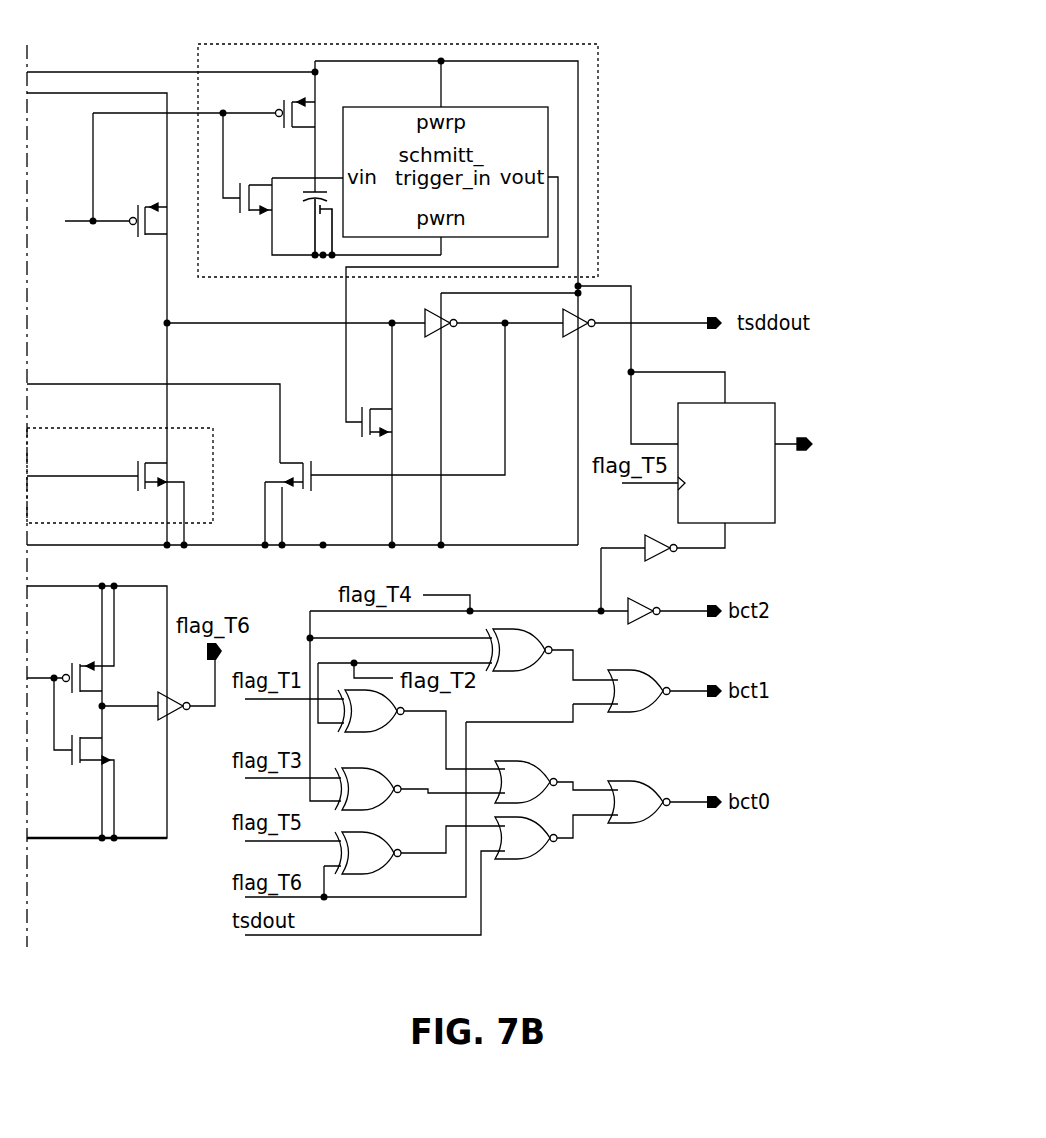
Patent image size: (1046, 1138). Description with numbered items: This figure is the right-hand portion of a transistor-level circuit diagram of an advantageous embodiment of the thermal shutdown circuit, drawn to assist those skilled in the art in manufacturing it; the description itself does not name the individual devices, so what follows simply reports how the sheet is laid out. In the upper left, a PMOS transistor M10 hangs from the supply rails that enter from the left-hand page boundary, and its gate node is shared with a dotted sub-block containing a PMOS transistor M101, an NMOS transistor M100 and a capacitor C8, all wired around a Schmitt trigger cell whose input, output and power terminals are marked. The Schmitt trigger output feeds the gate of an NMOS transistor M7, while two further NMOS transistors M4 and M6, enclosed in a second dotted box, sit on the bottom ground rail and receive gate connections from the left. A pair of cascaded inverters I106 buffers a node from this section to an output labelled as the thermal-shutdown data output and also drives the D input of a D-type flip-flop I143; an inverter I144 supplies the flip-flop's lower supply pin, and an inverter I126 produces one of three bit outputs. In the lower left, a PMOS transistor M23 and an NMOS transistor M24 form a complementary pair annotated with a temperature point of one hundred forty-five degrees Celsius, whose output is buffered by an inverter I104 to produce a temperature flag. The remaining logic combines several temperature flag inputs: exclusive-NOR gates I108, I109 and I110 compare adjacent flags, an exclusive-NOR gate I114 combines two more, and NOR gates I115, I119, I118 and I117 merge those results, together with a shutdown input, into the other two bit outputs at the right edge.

The PMOS transistor M10 is at (116, 205).
The PMOS transistor M101 is at (284, 128).
The NMOS transistor M100 is at (241, 213).
The capacitor C8 is at (308, 223).
The NMOS transistor M7 is at (376, 407).
The NMOS transistor M4 is at (171, 496).
The NMOS transistor M6 is at (275, 496).
The PMOS transistor M23 is at (84, 639).
The NMOS transistor M24 is at (109, 758).
The inverter I104 is at (161, 701).
The inverter I106 is at (566, 316).
The D flip-flop I143 (DFFCQX2_QQC0) I143 is at (799, 448).
The inverter I144 is at (658, 563).
The inverter I126 is at (667, 600).
The XNOR gate I114 is at (552, 649).
The NOR gate I115 is at (586, 687).
The XNOR gate I108 is at (421, 729).
The XNOR gate I109 is at (420, 796).
The XNOR gate I110 is at (420, 857).
The NOR gate I119 is at (556, 775).
The NOR gate I118 is at (556, 844).
The NOR gate I117 is at (657, 793).